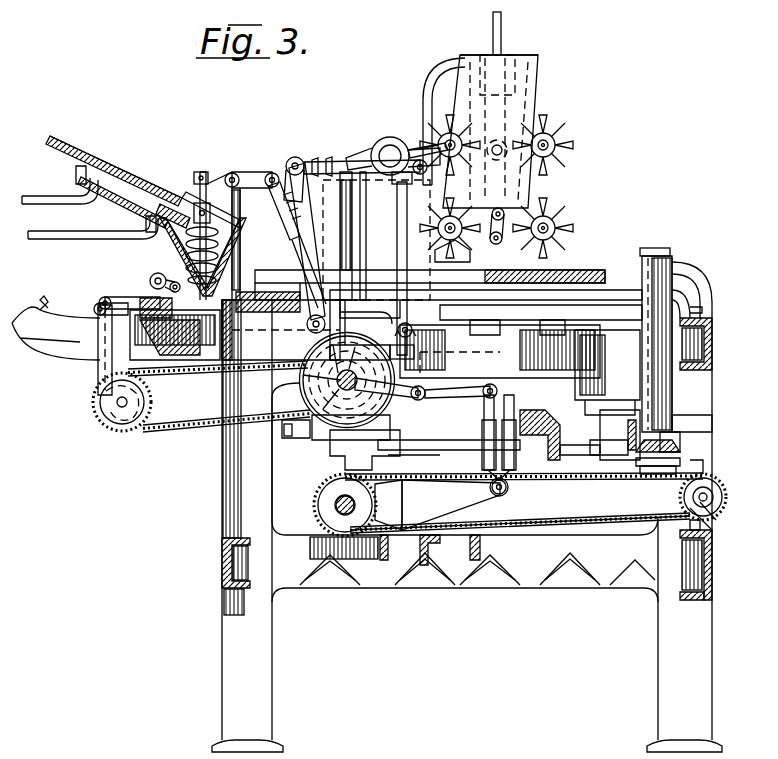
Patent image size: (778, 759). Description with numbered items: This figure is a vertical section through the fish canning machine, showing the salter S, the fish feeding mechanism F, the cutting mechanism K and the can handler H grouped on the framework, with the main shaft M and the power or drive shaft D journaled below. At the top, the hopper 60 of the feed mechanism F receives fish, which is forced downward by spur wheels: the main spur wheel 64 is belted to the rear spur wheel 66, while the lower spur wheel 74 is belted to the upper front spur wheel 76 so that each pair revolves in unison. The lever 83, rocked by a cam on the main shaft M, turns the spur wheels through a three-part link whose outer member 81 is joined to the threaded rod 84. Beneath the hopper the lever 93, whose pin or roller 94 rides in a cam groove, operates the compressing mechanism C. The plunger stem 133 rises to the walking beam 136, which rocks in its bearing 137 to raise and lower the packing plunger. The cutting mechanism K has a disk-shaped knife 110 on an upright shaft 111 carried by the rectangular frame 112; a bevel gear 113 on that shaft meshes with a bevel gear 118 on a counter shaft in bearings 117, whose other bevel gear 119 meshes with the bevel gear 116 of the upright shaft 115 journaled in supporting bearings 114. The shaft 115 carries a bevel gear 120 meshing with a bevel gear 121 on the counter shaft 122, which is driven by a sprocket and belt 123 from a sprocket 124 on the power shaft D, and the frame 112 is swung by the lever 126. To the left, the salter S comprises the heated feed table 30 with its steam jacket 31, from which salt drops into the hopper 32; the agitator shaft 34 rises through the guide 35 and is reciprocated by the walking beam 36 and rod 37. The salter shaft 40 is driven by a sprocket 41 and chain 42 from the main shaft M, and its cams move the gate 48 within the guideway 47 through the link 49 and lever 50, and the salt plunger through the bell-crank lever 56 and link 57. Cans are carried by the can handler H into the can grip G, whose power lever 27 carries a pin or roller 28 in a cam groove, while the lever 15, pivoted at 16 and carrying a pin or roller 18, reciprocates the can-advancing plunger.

The plunger stem 133 is at (502, 28).
The hopper 60 is at (530, 68).
The feed mechanism F is at (499, 131).
The rear spur wheel 66 is at (424, 98).
The walking beam 136 is at (425, 140).
The bearing 137 is at (388, 137).
The upper front spur wheel 76 is at (562, 136).
The lower spur wheel 74 is at (560, 232).
The feed table 30 is at (115, 172).
The steam space or jacket 31 is at (116, 190).
The guide 35 is at (196, 200).
The hopper 32 is at (186, 258).
The salter S is at (198, 223).
The upright shaft 34 is at (222, 168).
The walking beam 36 is at (252, 172).
The rod 37 is at (286, 216).
The outer member 81 is at (310, 152).
The rod 84 is at (336, 165).
The lever 83 is at (308, 238).
The lever 93 is at (408, 292).
The main spur wheel 64 is at (447, 251).
The disk-shaped knife 110 is at (546, 275).
The upright shaft 111 is at (545, 297).
The rectangular frame 112 is at (598, 300).
The can grip G is at (500, 350).
The pin or roller 94 is at (396, 334).
The cutting mechanism K is at (607, 372).
The upright shaft 115 is at (656, 250).
The supporting bearings 114 is at (682, 278).
The can handler H is at (281, 330).
The transverse guide 47 is at (262, 308).
The link 57 is at (116, 292).
The gate 48 is at (150, 298).
The bell-crank lever 56 is at (176, 282).
The link 49 is at (108, 300).
The lever 50 is at (100, 334).
The sprocket 41 is at (96, 404).
The salter shaft 40 is at (118, 410).
The chain 42 is at (183, 428).
The main shaft M is at (337, 384).
The pin or roller 28 is at (380, 380).
The pivot 16 is at (310, 440).
The lever 15 is at (318, 460).
The pin or roller 18 is at (449, 443).
The bevel gear 113 is at (540, 433).
The bevel gear 118 is at (548, 452).
The bearings 117 is at (608, 458).
The bevel gear 116 is at (690, 450).
The bevel gear 119 is at (672, 436).
The power or drive shaft D is at (336, 506).
The sprocket 124 is at (347, 520).
The compressing mechanism C is at (524, 503).
The power lever 27 is at (456, 488).
The lever 126 is at (522, 480).
The sprocket and belt 123 is at (562, 520).
The bevel gear 121 is at (714, 494).
The bevel gear 120 is at (712, 476).
The counter shaft 122 is at (700, 508).